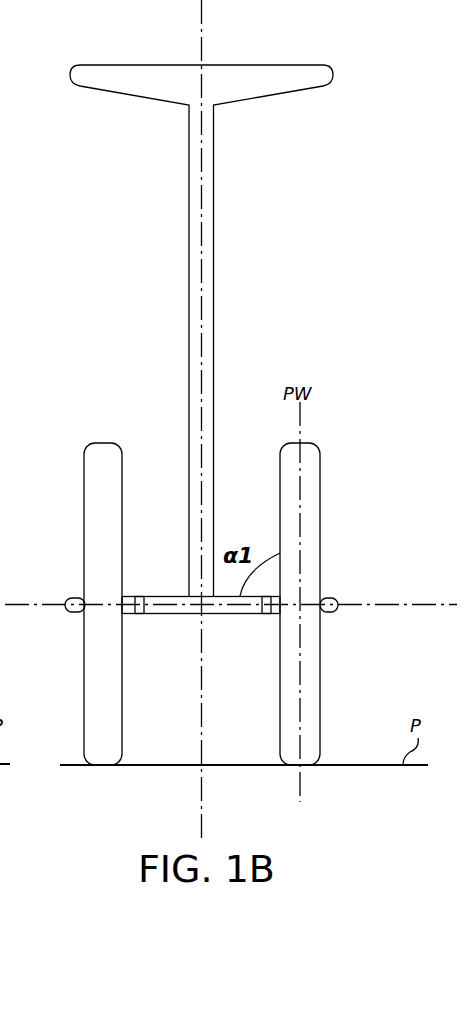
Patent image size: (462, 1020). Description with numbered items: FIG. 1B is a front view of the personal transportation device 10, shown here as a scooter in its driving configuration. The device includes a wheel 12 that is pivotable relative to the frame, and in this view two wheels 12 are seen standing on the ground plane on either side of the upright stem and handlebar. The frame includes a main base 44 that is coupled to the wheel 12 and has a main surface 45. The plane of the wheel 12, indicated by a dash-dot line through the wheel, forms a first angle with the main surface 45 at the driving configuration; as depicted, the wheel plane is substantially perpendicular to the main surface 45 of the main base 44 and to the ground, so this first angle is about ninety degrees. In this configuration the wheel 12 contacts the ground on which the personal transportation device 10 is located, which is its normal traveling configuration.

The personal transportation device 10 is at (257, 415).
The wheel 12 is at (320, 510).
The main base 44 is at (173, 614).
The main surface 45 is at (167, 596).